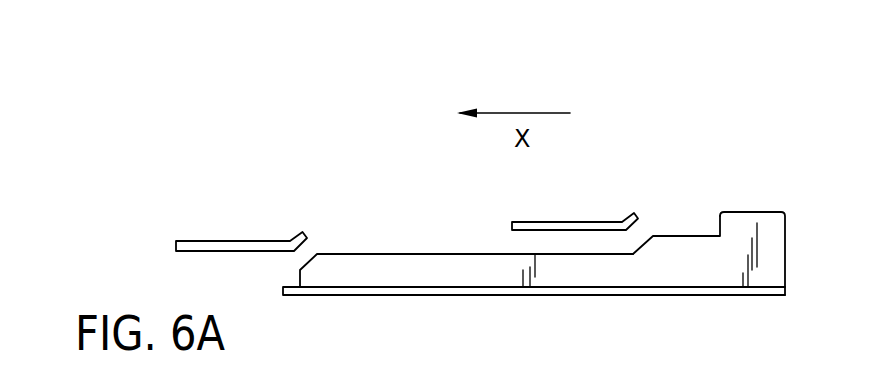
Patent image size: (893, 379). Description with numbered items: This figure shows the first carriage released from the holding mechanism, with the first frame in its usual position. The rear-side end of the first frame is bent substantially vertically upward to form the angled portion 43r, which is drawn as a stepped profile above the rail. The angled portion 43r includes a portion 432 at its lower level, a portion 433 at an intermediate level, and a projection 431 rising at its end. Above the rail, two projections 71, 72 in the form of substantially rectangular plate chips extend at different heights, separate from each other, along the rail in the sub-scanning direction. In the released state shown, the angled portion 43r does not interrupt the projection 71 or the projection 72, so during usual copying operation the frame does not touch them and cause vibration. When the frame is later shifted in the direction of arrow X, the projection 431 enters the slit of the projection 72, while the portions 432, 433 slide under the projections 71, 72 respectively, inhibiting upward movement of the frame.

The projection 71 is at (231, 241).
The upstream-side projection 72 is at (572, 222).
The angled portion 43r is at (440, 270).
The portion of the angled portion 432 is at (372, 253).
The portion of the angled portion 433 is at (683, 236).
The projection of the angled portion 431 is at (748, 212).